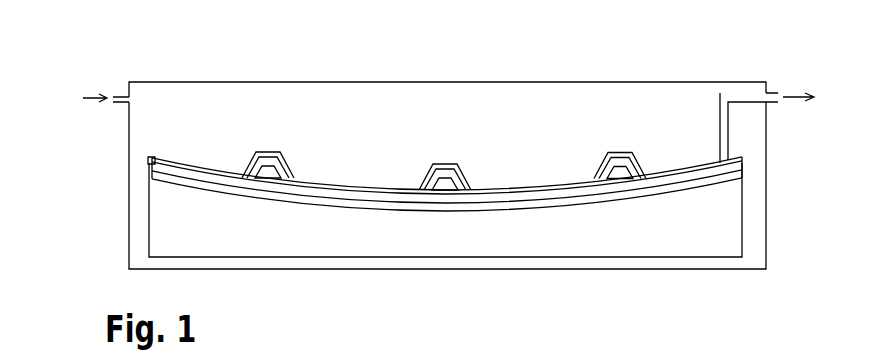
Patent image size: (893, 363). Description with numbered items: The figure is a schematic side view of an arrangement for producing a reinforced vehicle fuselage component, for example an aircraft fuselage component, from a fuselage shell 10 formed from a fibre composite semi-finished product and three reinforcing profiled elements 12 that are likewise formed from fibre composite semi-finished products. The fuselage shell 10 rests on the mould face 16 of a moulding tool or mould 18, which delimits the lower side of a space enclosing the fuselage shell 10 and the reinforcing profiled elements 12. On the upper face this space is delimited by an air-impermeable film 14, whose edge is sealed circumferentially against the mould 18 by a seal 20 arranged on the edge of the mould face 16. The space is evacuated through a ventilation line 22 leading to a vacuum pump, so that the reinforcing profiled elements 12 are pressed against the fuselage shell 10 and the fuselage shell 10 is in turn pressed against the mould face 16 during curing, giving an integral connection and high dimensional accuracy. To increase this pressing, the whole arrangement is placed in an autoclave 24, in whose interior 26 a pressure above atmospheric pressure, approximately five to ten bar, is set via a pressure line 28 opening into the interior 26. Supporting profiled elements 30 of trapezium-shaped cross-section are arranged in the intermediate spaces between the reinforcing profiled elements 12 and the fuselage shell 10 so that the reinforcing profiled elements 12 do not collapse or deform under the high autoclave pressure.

The fuselage shell 10 is at (568, 195).
The reinforcing profiled elements 12 is at (285, 150).
The air-impermeable film 14 is at (308, 178).
The mould face 16 is at (217, 188).
The mould 18 is at (405, 240).
The seal 20 is at (150, 162).
The ventilation line 22 is at (730, 125).
The autoclave 24 is at (228, 80).
The interior 26 is at (357, 102).
The pressure line 28 is at (115, 105).
The supporting profiled elements 30 is at (272, 174).